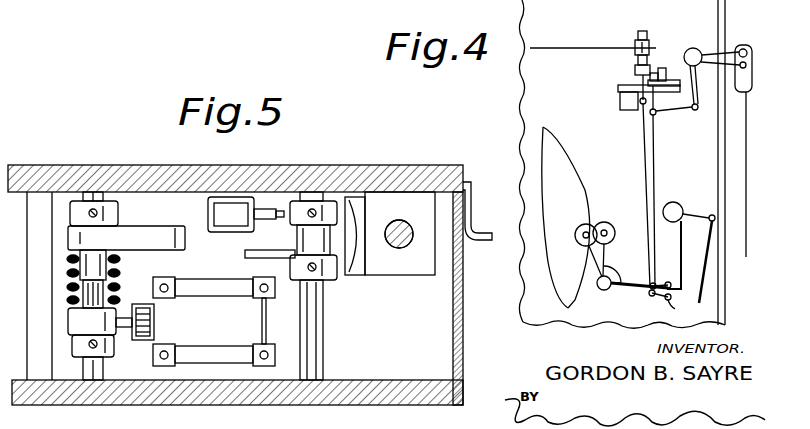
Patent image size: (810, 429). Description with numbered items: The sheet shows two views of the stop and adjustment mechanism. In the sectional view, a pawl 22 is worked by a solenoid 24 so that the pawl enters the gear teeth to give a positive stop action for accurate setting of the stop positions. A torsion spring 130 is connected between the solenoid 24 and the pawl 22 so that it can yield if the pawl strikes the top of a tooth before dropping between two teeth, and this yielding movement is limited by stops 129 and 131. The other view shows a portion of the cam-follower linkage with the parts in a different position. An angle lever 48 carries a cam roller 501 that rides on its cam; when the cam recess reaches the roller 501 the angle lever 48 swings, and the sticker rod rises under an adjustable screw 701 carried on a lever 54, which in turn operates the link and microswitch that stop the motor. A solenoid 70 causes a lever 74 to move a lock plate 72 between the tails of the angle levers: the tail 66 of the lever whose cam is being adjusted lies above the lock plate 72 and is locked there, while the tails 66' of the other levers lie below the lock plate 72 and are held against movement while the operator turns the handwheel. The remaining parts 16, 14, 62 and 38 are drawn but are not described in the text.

In FIG. 5, the solenoid valve unit 16 is at (262, 165).
In FIG. 5, the pawl 22 is at (186, 243).
In FIG. 5, the torsion spring 130 is at (112, 270).
In FIG. 5, the stop 129 is at (72, 290).
In FIG. 5, the stop 131 is at (76, 302).
In FIG. 5, the plate 14 is at (268, 250).
In FIG. 5, the solenoid 70 is at (357, 228).
In FIG. 5, the solenoid 24 is at (212, 358).
In FIG. 4, the lever 54 is at (583, 46).
In FIG. 4, the adjustable screw 701 is at (645, 34).
In FIG. 4, the bracket 62 is at (664, 68).
In FIG. 4, the rod 38 is at (748, 135).
In FIG. 4, the lever 74 is at (688, 216).
In FIG. 4, the lock plate 72 is at (684, 250).
In FIG. 4, the cam roller 501 is at (613, 227).
In FIG. 4, the angle lever 48 is at (606, 258).
In FIG. 4, the tail 66 is at (663, 279).
In FIG. 4, the tail 66' is at (681, 308).